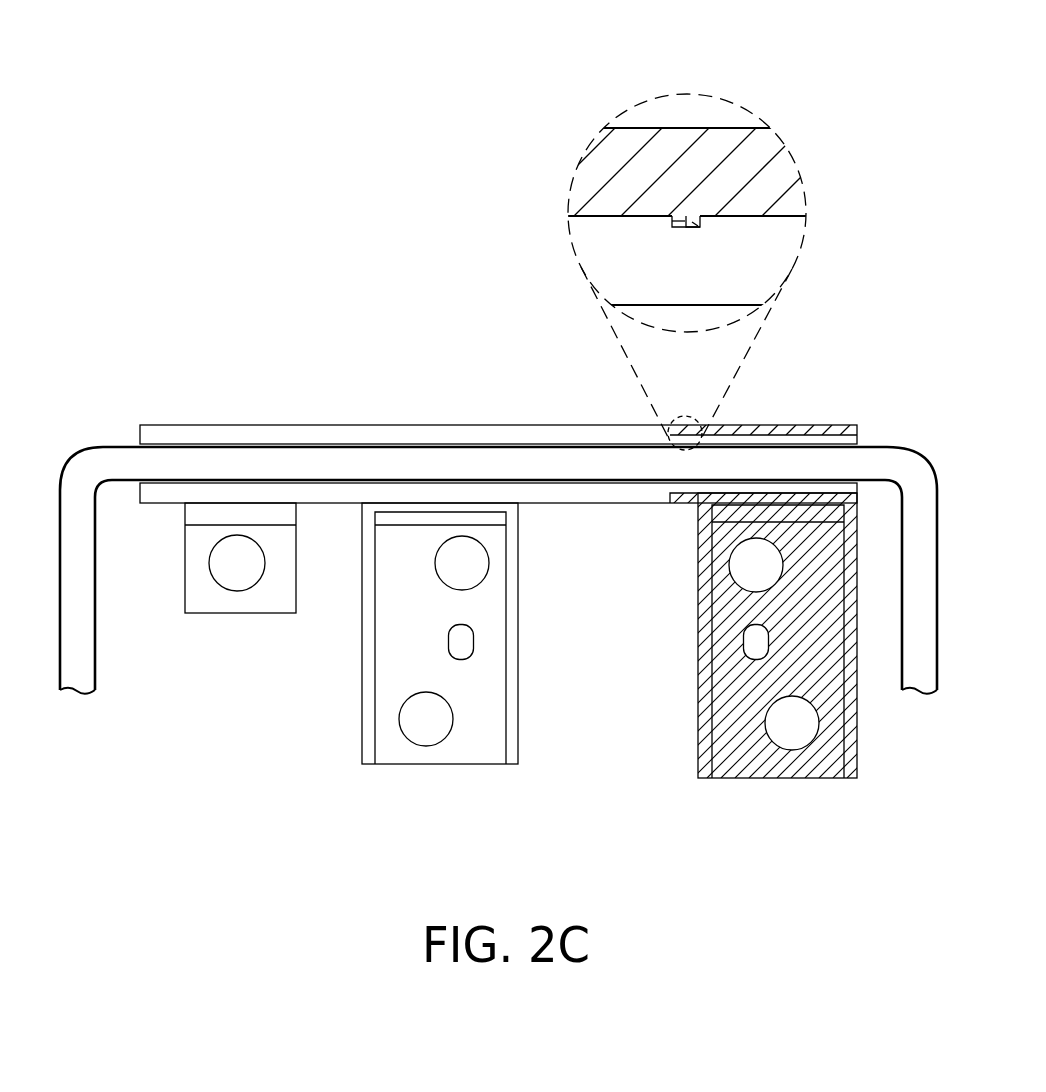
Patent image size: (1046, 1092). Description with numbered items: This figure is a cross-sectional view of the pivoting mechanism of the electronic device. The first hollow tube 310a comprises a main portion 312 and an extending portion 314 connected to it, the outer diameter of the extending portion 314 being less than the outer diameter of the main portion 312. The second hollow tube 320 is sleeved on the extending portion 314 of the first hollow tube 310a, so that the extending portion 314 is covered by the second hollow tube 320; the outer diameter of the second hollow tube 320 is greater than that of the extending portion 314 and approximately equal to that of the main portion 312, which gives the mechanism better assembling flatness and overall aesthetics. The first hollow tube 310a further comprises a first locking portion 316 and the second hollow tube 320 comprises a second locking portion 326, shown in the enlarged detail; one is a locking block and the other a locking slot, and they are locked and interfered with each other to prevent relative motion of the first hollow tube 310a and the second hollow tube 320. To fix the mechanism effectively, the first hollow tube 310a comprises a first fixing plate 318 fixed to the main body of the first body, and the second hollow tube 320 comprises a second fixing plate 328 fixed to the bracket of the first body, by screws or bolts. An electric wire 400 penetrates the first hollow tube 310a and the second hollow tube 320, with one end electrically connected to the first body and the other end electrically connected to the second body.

The first hollow tube 310a is at (506, 402).
The main portion 312 is at (377, 433).
The extending portion 314 is at (787, 440).
The first locking portion 316 is at (674, 223).
The first fixing plate 318 is at (480, 748).
The second hollow tube 320 is at (705, 146).
The second locking portion 326 is at (693, 223).
The second fixing plate 328 is at (827, 767).
The electric wire 400 is at (917, 568).